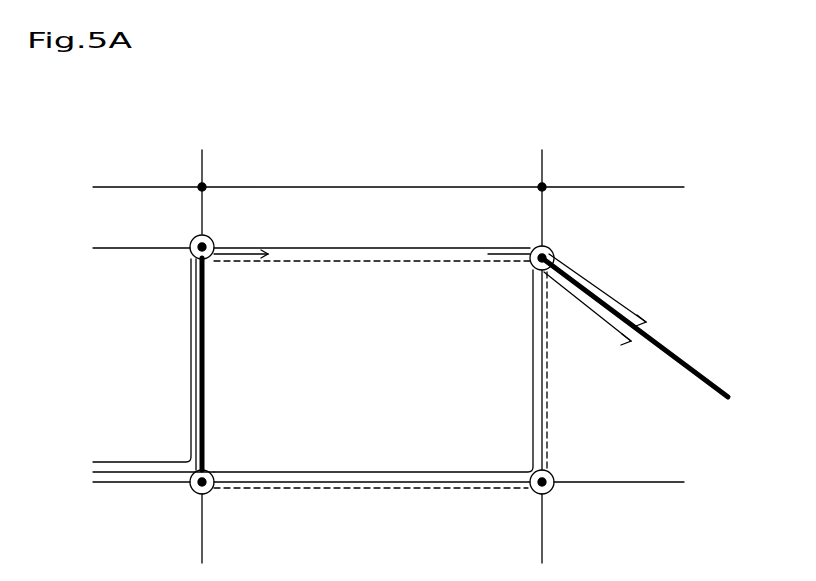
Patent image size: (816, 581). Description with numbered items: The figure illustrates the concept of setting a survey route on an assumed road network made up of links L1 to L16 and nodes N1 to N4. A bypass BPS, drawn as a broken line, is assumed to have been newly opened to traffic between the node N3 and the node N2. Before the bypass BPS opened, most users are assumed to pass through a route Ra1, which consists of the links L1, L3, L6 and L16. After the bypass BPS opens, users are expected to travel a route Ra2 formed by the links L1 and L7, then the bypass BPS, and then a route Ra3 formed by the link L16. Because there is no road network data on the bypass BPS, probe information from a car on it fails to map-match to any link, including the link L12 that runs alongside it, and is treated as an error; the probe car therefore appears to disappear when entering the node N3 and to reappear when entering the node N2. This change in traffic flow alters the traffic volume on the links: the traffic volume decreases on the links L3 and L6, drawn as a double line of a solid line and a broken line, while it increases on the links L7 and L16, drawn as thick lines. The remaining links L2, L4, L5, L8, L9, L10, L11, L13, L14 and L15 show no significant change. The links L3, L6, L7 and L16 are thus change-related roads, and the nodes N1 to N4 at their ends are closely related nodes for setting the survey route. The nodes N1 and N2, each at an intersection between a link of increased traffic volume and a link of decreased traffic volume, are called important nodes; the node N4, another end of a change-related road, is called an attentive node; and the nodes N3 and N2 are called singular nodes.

The link L1 is at (107, 484).
The link L2 is at (205, 530).
The link L3 is at (422, 480).
The link L4 is at (545, 545).
The link L5 is at (608, 481).
The link L6 is at (545, 382).
The link L7 is at (206, 344).
The link L8 is at (148, 246).
The link L9 is at (145, 186).
The link L10 is at (205, 212).
The link L11 is at (205, 167).
The link L12 is at (375, 186).
The link L13 is at (547, 208).
The link L14 is at (547, 156).
The link L15 is at (657, 186).
The link L16 is at (683, 372).
The node N1 is at (192, 492).
The node N2 is at (532, 268).
The node N3 is at (190, 255).
The node N4 is at (553, 492).
The route Ra1 is at (275, 470).
The route Ra2 is at (142, 460).
The route Ra3 is at (583, 273).
The bypass BPS is at (345, 247).